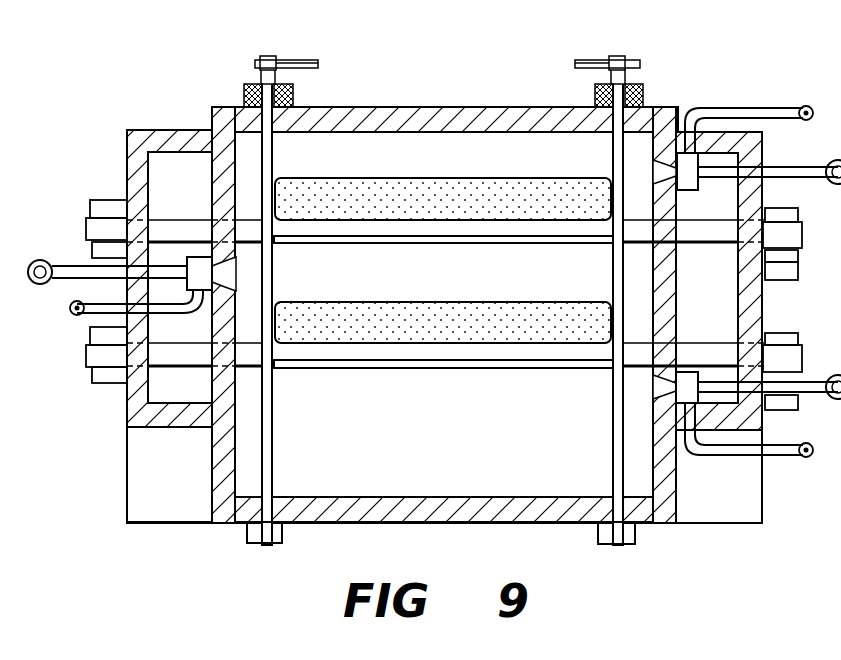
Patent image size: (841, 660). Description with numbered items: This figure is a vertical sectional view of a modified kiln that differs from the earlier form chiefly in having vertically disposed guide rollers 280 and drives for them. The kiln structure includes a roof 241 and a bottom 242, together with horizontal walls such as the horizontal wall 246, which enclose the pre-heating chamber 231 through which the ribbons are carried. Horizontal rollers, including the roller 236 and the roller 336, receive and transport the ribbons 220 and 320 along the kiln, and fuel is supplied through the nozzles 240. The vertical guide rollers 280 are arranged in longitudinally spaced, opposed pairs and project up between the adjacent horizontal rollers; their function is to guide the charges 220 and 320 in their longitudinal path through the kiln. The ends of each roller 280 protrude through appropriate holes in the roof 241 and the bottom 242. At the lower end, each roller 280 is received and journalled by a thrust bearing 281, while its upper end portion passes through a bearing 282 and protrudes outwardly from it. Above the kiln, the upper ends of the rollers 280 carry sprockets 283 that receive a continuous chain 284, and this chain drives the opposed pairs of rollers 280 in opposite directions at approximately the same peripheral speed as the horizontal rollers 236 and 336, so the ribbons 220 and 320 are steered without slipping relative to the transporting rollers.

The ribbon 220 is at (440, 302).
The pre-heating chamber 231 is at (404, 135).
The roller 236 is at (486, 368).
The nozzle 240 is at (200, 256).
The roof 241 is at (498, 107).
The bottom 242 is at (404, 497).
The horizontal wall 246 is at (177, 425).
The vertical guide roller 280 is at (275, 176).
The thrust bearing 281 is at (262, 534).
The bearing 282 is at (245, 88).
The sprocket 283 is at (267, 57).
The continuous chain 284 is at (300, 59).
The ribbon 320 is at (536, 185).
The roller 336 is at (515, 236).